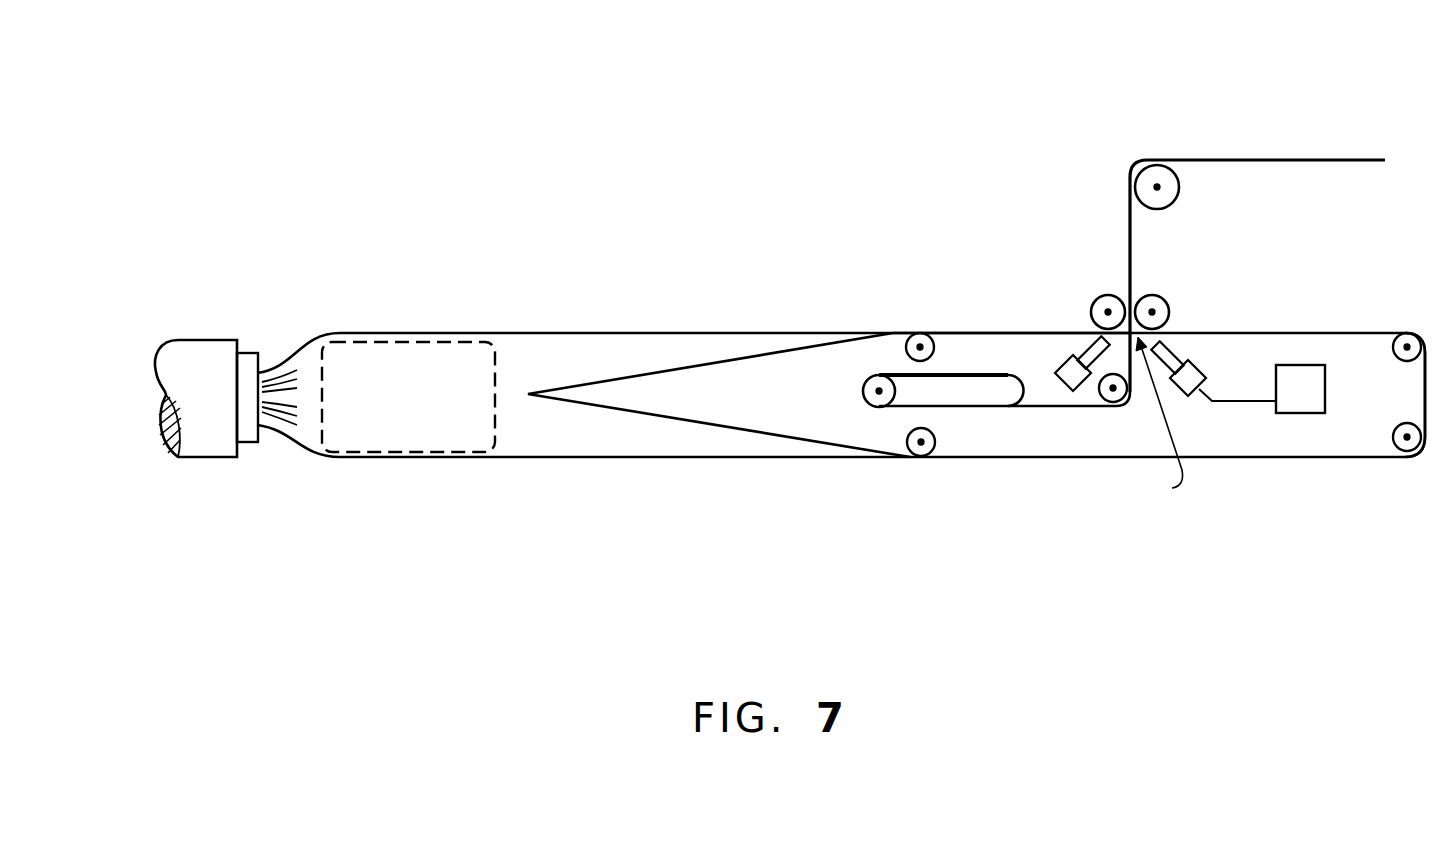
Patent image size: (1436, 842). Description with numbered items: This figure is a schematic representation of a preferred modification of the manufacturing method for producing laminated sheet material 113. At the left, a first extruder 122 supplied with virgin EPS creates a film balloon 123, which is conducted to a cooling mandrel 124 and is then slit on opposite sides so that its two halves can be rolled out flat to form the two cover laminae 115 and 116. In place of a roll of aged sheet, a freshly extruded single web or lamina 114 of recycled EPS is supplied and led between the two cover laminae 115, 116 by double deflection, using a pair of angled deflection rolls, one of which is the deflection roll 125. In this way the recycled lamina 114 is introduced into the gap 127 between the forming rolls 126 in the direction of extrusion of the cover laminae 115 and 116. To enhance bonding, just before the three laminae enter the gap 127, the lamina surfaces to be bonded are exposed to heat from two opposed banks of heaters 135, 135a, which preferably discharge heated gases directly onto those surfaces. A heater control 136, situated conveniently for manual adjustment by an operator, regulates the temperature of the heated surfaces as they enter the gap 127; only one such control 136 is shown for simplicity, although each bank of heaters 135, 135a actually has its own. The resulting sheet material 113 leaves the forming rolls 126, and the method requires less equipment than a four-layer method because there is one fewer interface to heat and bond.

The sheet material 113 is at (1307, 158).
The lamina of recycled EPS 114 is at (1003, 372).
The cover lamina 115 is at (967, 332).
The cover lamina 116 is at (1347, 455).
The first extruder 122 is at (205, 357).
The film balloon 123 is at (545, 458).
The cooling mandrel 124 is at (388, 435).
The angled deflection roll 125 is at (964, 392).
The forming rolls 126 is at (1100, 300).
The gap 127 is at (1158, 420).
The bank of heaters 135 is at (1073, 373).
The bank of heaters 135a is at (1188, 396).
The heater control 136 is at (1310, 398).